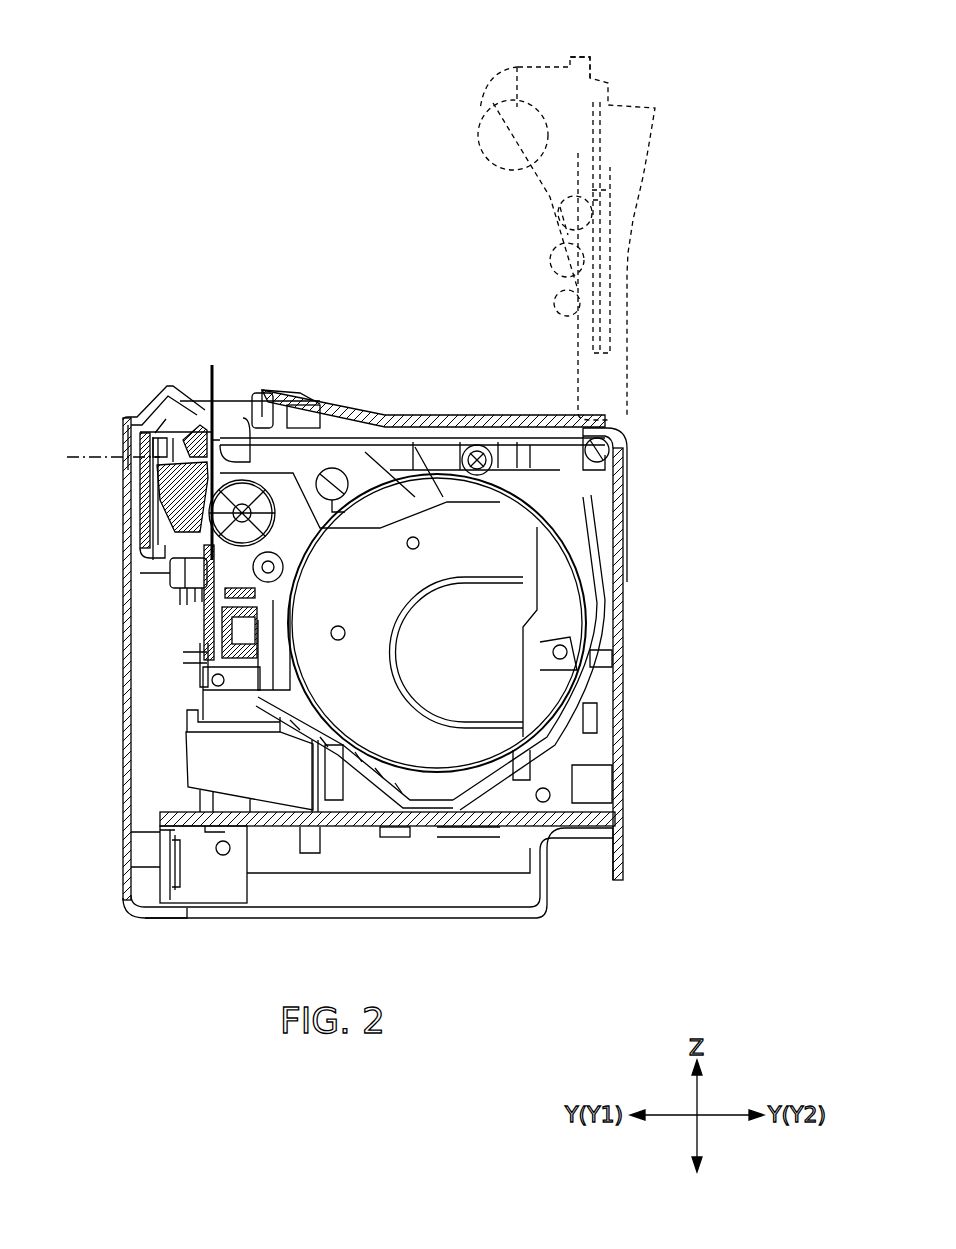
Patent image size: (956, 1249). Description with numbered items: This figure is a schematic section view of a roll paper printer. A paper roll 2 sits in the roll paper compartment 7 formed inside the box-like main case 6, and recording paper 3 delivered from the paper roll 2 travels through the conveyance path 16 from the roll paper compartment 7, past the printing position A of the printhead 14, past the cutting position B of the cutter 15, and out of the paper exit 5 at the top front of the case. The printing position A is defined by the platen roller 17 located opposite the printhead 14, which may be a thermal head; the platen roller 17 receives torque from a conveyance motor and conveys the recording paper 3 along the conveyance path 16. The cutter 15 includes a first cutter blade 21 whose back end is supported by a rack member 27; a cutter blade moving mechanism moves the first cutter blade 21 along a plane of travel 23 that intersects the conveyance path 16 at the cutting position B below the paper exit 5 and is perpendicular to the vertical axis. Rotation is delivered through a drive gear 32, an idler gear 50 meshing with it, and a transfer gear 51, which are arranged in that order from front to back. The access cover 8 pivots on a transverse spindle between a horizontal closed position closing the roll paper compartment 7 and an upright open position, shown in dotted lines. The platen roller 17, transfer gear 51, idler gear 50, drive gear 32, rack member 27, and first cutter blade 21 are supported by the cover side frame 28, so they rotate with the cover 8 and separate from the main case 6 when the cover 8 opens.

The paper roll 2 is at (597, 600).
The recording paper 3 is at (210, 363).
The paper exit 5 is at (205, 440).
The main case 6 is at (630, 577).
The roll paper compartment 7 is at (494, 703).
The access cover 8 is at (352, 413).
The printhead 14 is at (143, 540).
The cutter 15 is at (150, 407).
The conveyance path 16 is at (187, 563).
The platen roller 17 is at (340, 470).
The first cutter blade 21 is at (608, 106).
The plane of travel 23 is at (76, 455).
The rack member 27 is at (620, 188).
The cover side frame 28 is at (503, 418).
The drive gear 32 is at (590, 203).
The idler gear 50 is at (600, 250).
The transfer gear 51 is at (590, 318).
The printing position A is at (260, 500).
The cutting position B is at (220, 450).